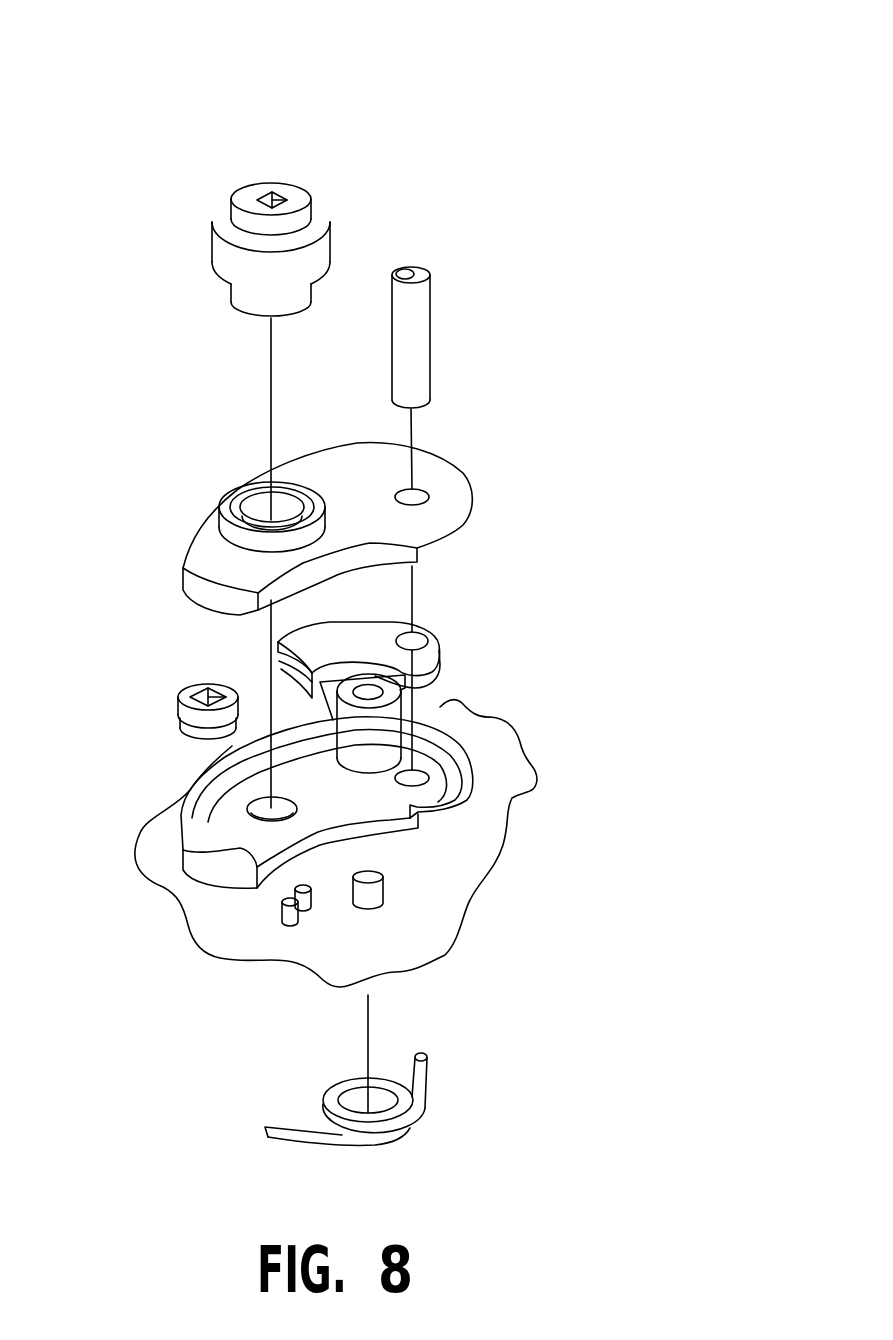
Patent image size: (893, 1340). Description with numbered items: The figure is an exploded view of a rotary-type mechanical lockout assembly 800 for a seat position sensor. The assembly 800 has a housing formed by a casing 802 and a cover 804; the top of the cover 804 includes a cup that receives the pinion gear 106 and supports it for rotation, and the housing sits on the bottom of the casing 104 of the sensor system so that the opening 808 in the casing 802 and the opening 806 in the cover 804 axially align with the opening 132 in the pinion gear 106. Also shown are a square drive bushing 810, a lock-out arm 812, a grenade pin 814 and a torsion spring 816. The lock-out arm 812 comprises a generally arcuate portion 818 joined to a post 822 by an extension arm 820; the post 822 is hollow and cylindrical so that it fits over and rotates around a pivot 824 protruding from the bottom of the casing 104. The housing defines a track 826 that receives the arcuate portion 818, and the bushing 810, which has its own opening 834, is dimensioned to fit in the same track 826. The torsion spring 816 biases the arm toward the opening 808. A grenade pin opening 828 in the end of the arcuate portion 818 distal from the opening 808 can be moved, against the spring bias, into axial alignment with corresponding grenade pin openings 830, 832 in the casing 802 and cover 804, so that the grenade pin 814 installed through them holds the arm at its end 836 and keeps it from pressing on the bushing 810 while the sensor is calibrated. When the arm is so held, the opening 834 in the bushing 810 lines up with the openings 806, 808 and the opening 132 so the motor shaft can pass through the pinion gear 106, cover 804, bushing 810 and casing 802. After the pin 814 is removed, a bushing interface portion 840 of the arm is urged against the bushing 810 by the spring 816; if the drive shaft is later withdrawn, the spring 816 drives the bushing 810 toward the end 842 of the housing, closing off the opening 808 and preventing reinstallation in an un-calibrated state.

The rotary-type mechanical lockout assembly 800 is at (108, 84).
The casing 104 is at (528, 762).
The pinion gear 106 is at (333, 237).
The opening 132 is at (263, 200).
The casing 802 is at (440, 737).
The cover 804 is at (476, 484).
The opening 806 is at (258, 513).
The opening 808 is at (250, 801).
The square drive bushing 810 is at (272, 713).
The lock-out arm 812 is at (436, 612).
The grenade pin 814 is at (430, 288).
The torsion spring 816 is at (430, 1082).
The arcuate portion 818 is at (280, 634).
The extension arm 820 is at (420, 693).
The post 822 is at (355, 747).
The pivot 824 is at (385, 887).
The track 826 is at (255, 850).
The grenade pin opening 828 is at (398, 635).
The grenade pin opening 830 is at (440, 763).
The grenade pin opening 832 is at (419, 494).
The opening 834 is at (177, 705).
The end 836 is at (494, 793).
The bushing interface portion 840 is at (273, 670).
The end 842 is at (180, 900).